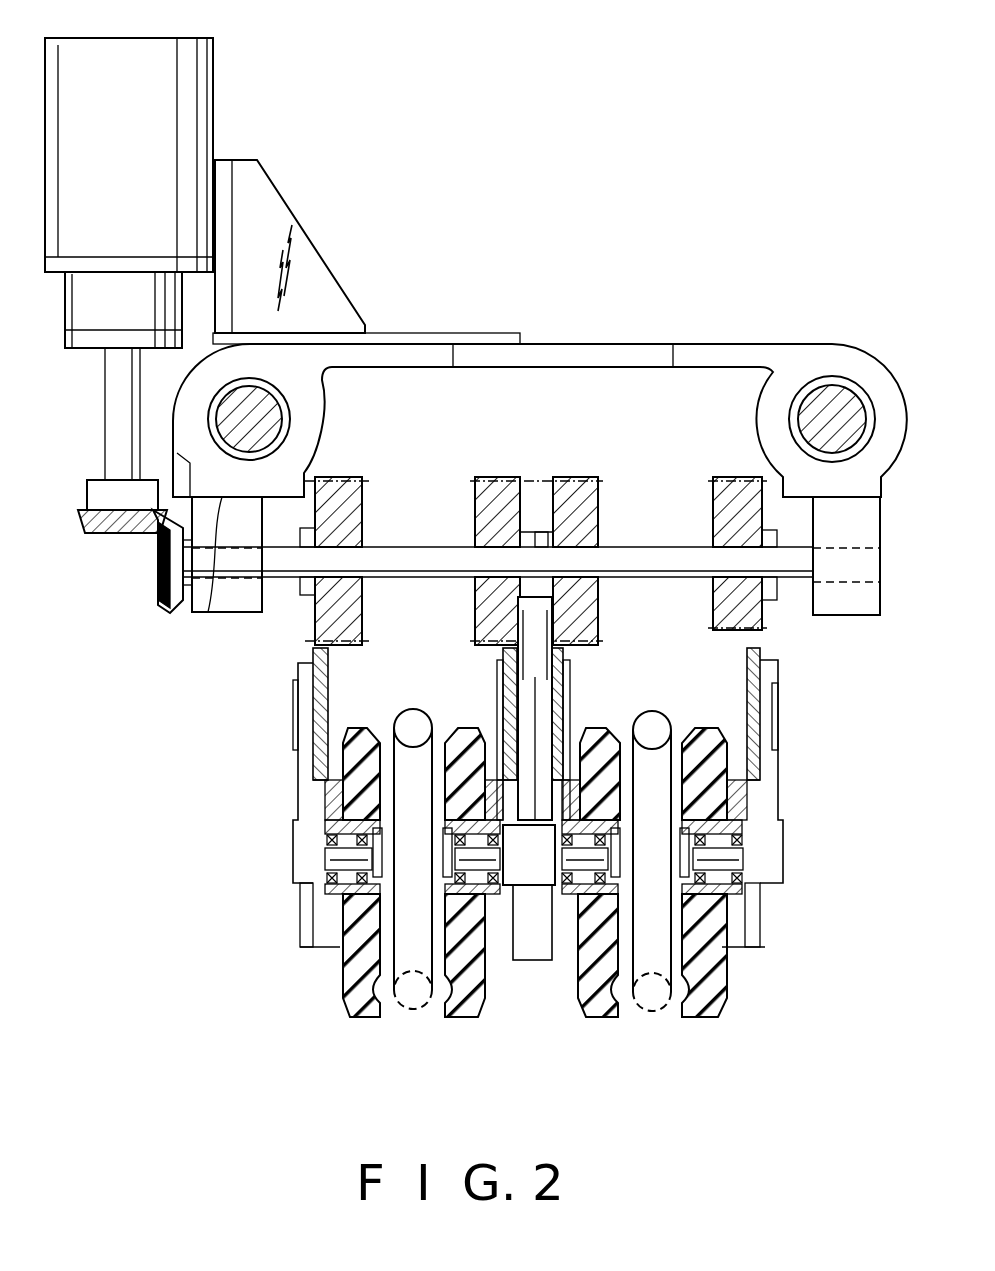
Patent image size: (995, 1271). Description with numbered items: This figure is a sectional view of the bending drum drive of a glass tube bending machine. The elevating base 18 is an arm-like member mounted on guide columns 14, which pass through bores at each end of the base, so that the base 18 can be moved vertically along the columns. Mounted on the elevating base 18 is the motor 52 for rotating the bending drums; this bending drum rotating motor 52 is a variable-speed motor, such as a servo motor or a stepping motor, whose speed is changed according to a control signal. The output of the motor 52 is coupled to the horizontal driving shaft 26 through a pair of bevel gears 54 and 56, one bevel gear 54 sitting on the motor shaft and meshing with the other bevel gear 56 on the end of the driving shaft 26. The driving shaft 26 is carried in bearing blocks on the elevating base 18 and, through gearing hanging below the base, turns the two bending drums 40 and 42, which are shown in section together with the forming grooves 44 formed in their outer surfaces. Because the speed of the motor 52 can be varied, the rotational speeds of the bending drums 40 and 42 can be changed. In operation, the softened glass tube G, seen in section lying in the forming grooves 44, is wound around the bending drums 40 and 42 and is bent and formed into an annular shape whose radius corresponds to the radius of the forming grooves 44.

The guide column 14 is at (270, 408).
The elevating base 18 is at (656, 350).
The driving shaft 26 is at (416, 556).
The bending drum 40 is at (360, 736).
The bending drum 42 is at (465, 736).
The forming groove 44 is at (386, 714).
The bending drum rotating motor 52 is at (214, 87).
The bevel gear 54 is at (112, 535).
The bevel gear 56 is at (158, 577).
The glass tube G is at (412, 1010).